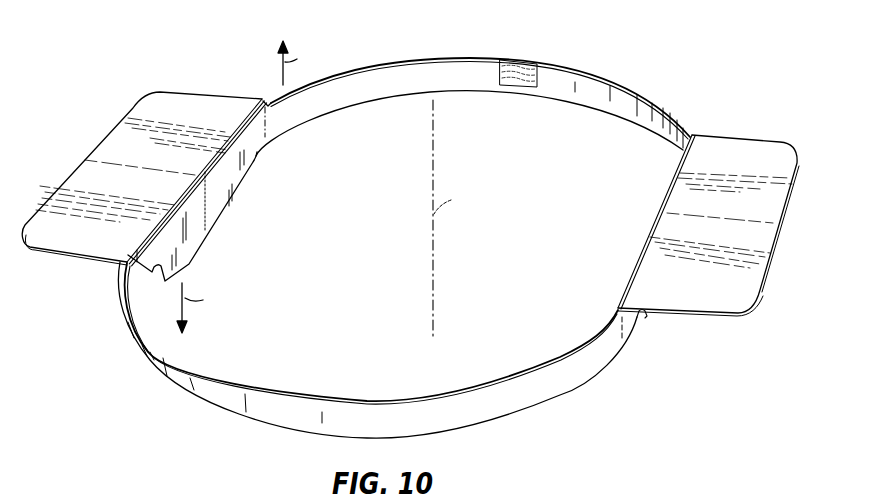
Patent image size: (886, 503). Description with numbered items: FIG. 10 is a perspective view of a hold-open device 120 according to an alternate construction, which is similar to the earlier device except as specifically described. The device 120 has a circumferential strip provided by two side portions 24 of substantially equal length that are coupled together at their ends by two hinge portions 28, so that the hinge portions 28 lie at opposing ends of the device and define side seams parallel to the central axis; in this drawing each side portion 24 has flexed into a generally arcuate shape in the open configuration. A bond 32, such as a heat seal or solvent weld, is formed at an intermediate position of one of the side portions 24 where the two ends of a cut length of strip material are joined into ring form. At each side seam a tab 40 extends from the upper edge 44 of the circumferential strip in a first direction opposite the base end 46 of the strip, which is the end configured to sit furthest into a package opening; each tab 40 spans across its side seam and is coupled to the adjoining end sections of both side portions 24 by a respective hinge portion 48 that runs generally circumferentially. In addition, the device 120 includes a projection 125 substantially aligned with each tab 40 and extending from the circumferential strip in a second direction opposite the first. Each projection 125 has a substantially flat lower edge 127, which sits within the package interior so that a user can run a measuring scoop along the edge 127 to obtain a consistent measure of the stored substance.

The hold-open device 120 is at (410, 220).
The side portions 24 is at (404, 220).
The hinge portions 28 is at (118, 162).
The bond 32 is at (522, 68).
The tab 40 is at (410, 175).
The upper edge 44 is at (469, 59).
The base end 46 is at (361, 98).
The hinge portion 48 is at (249, 99).
The projection 125 is at (261, 185).
The lower edge 127 is at (222, 218).